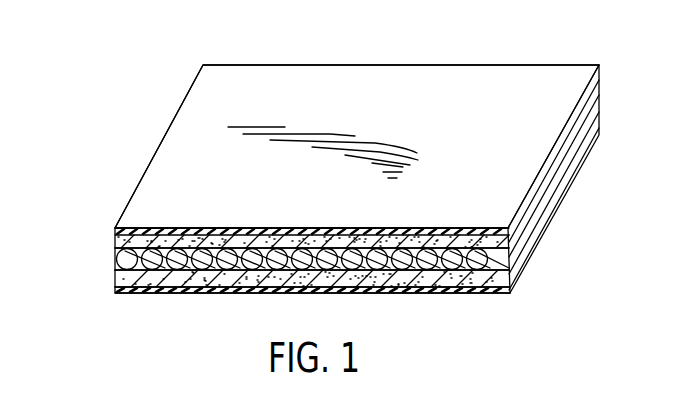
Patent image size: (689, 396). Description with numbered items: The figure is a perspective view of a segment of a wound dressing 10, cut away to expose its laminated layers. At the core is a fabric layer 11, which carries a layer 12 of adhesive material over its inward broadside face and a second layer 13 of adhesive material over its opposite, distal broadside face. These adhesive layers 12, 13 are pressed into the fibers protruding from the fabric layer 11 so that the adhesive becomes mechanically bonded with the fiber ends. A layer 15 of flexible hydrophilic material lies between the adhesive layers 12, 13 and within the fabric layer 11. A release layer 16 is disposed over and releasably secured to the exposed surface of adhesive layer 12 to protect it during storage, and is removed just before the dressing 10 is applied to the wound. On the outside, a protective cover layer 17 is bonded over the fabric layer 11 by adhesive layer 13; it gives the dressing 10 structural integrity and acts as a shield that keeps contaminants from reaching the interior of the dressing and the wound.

The wound dressing 10 is at (412, 53).
The fabric layer 11 is at (133, 258).
The adhesive layer 12 is at (130, 275).
The second adhesive layer 13 is at (127, 238).
The hydrophilic layer 15 is at (447, 260).
The release layer 16 is at (230, 292).
The protective cover layer 17 is at (147, 203).